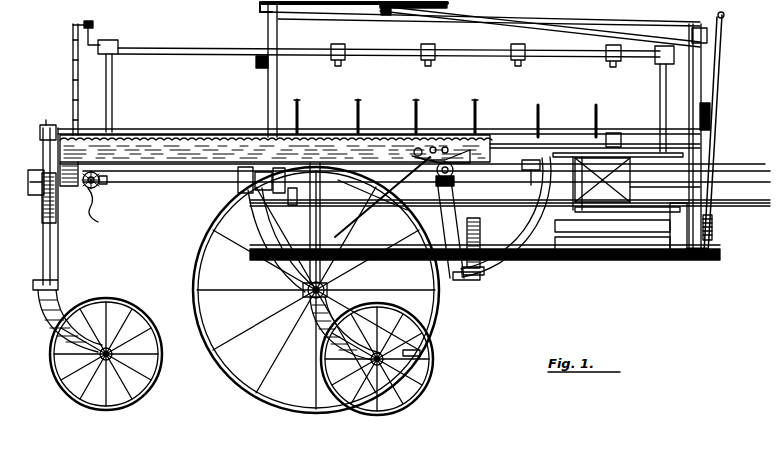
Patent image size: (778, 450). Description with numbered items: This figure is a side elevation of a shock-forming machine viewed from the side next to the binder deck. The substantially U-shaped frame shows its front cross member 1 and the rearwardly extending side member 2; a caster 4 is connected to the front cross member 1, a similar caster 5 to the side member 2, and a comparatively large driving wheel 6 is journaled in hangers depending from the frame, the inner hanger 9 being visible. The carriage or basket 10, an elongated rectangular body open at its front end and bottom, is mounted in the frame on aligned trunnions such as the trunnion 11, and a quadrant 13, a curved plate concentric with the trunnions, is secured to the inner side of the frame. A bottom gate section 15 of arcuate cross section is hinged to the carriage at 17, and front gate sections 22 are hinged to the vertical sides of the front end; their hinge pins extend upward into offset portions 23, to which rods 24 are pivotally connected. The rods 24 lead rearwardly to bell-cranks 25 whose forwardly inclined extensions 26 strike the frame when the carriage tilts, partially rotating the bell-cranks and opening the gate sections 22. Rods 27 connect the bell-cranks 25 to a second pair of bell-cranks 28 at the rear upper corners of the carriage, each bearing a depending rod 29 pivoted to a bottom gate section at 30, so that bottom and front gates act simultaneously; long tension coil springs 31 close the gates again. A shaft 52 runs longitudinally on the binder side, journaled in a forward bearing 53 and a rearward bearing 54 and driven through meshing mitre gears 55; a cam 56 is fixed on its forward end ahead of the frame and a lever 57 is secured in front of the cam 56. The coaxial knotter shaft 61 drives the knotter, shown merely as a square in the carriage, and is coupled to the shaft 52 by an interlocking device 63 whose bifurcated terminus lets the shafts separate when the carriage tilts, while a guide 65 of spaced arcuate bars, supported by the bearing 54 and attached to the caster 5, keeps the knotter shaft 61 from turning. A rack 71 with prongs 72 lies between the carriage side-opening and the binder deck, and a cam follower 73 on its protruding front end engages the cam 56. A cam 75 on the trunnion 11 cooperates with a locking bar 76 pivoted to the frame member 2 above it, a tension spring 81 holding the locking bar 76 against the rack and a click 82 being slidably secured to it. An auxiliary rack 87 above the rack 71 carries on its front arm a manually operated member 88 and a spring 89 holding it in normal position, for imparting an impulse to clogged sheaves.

The front cross member 1 is at (62, 198).
The side member 2 is at (276, 160).
The caster 4 is at (60, 405).
The caster 5 is at (428, 388).
The driving wheel 6 is at (228, 385).
The inner hanger 9 is at (150, 199).
The carriage or basket 10 is at (278, 92).
The trunnion 11 is at (454, 172).
The quadrant 13 is at (498, 268).
The gate section 15 is at (640, 260).
The hinge 17 is at (683, 252).
The gate sections 22 is at (256, 64).
The offset portion 23 is at (261, 6).
The rods 24 is at (262, 4).
The bell-cranks 25 is at (394, 15).
The forwardly inclined extensions 26 is at (376, 12).
The rods 27 is at (450, 10).
The bell-cranks 28 is at (719, 13).
The rod 29 is at (711, 130).
The pivotal connection 30 is at (707, 250).
The tension coil springs 31 is at (712, 230).
The shaft 52 is at (196, 185).
The bearing 53 is at (97, 190).
The bearing 54 is at (234, 187).
The mitre gears 55 is at (98, 222).
The cam 56 is at (46, 225).
The lever 57 is at (38, 190).
The knotter shaft 61 is at (537, 184).
The interlocking device 63 is at (238, 200).
The guide 65 is at (286, 272).
The rack 71 is at (193, 130).
The prongs 72 is at (414, 108).
The cam follower 73 is at (44, 152).
The cam 75 is at (440, 188).
The locking bar 76 is at (420, 148).
The tension spring 81 is at (355, 230).
The click 82 is at (440, 150).
The auxiliary rack 87 is at (196, 55).
The manually operated member 88 is at (96, 26).
The spring 89 is at (73, 72).